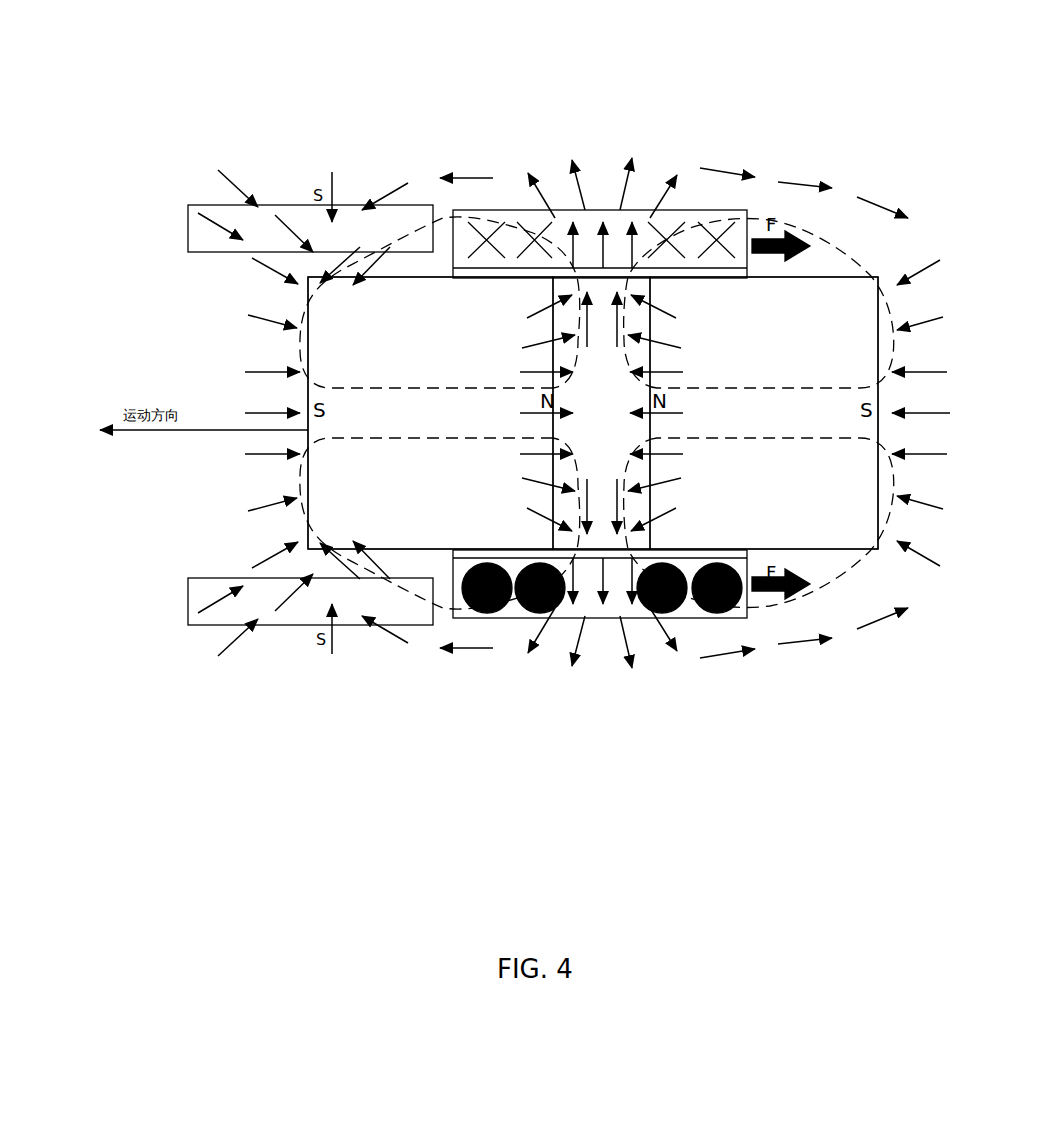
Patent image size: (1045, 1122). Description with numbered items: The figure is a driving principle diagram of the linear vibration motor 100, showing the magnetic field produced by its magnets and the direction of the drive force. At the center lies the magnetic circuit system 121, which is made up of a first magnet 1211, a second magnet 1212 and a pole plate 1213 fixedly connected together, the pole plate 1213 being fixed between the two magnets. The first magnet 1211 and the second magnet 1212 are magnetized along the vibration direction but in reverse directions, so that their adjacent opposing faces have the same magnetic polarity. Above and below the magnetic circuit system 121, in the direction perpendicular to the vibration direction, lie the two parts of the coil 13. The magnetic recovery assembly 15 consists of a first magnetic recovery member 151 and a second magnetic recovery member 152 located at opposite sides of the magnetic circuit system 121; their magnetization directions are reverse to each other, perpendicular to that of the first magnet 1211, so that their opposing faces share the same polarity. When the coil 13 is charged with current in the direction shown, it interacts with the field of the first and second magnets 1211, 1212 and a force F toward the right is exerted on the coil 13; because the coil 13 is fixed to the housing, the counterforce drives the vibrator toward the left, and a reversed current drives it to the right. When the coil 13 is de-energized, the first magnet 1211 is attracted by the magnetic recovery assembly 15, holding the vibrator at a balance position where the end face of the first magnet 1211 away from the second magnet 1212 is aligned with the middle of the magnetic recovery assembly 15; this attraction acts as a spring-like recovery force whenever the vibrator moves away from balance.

The linear vibration motor 100 is at (540, 46).
The coil 13 is at (637, 217).
The magnetic recovery assembly 15 is at (75, 333).
The first magnetic recovery member 151 is at (190, 240).
The second magnetic recovery member 152 is at (192, 583).
The magnetic circuit system 121 is at (855, 778).
The first magnet 1211 is at (484, 507).
The second magnet 1212 is at (838, 507).
The pole plate 1213 is at (602, 467).